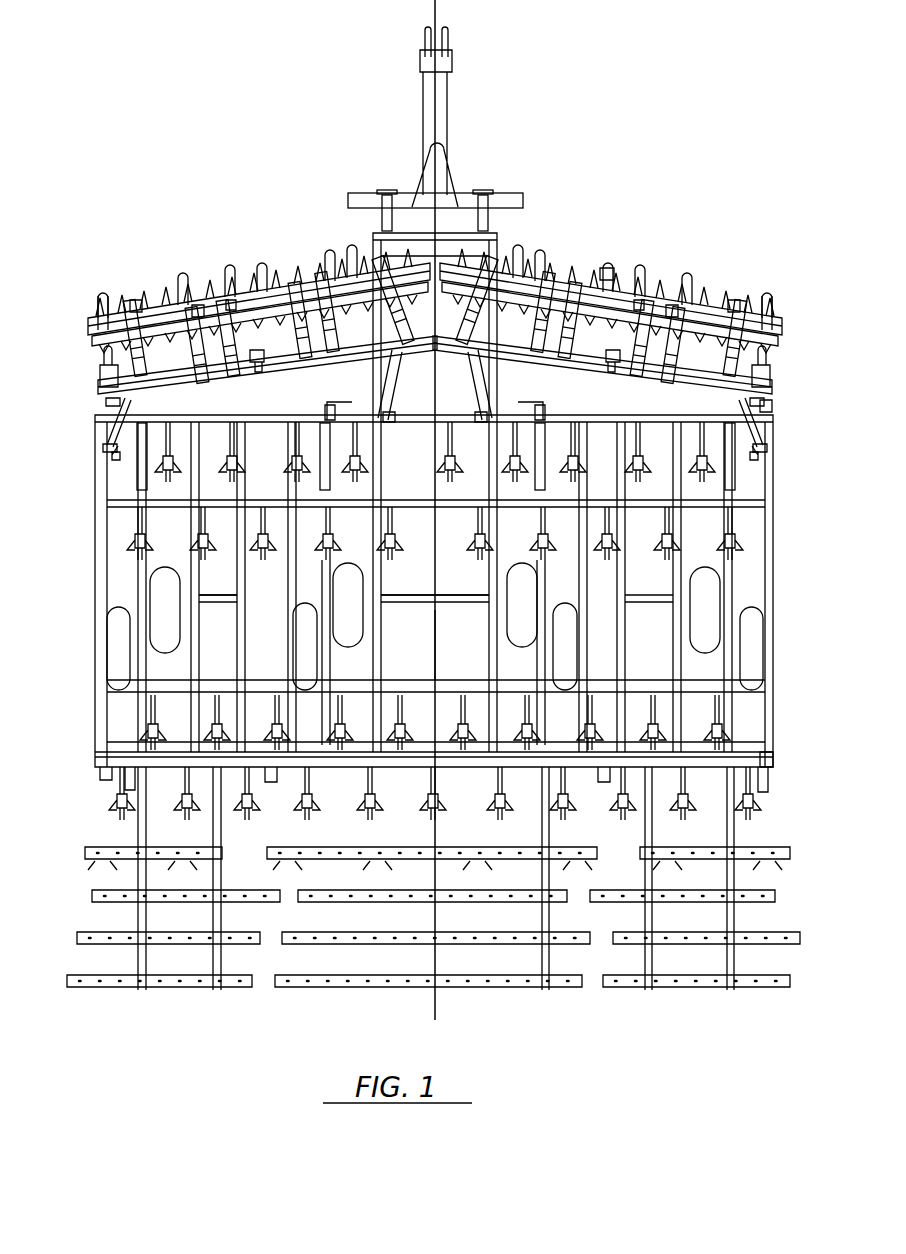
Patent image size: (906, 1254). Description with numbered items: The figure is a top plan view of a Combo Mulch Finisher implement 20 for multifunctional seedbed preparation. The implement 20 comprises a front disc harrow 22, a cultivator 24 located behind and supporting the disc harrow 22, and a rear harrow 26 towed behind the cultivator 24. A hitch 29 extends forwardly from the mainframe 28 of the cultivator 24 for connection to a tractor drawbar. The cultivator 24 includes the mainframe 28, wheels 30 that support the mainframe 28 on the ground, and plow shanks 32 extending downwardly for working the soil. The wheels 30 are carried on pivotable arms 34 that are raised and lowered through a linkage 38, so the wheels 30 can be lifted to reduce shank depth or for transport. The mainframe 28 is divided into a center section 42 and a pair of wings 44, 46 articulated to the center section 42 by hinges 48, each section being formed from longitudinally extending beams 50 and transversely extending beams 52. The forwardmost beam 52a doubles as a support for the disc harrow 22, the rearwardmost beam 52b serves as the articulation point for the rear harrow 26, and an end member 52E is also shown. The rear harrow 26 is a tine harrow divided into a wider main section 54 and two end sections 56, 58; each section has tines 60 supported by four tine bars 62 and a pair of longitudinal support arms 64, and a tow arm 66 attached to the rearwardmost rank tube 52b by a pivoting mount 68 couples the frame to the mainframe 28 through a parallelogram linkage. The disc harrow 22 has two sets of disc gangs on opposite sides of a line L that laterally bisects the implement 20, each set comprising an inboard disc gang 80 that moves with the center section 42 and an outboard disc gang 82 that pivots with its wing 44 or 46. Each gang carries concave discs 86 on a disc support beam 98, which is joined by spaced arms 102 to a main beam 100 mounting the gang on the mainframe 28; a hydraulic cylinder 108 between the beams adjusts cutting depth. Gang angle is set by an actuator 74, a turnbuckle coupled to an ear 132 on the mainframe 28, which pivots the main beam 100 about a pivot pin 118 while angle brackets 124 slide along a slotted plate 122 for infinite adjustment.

The Combo Mulch Finisher implement 20 is at (701, 218).
The front disc harrow 22 is at (180, 254).
The cultivator 24 is at (86, 584).
The rear harrow 26 is at (128, 1010).
The mainframe 28 is at (789, 504).
The hitch 29 is at (442, 170).
The wheels 30 is at (165, 632).
The plow shanks 32 is at (150, 470).
The arms 34 is at (332, 488).
The linkage 38 is at (331, 562).
The center section 42 is at (412, 784).
The wing 44 is at (172, 782).
The wing 46 is at (715, 783).
The hinges 48 is at (292, 402).
The longitudinally extending beams 50 is at (200, 624).
The transversely extending beams 52 is at (440, 678).
The frame member end 52E is at (616, 278).
The forwardmost beam 52a is at (772, 412).
The rearwardmost beam 52b is at (773, 764).
The main section 54 is at (495, 1006).
The end section 56 is at (198, 998).
The end section 58 is at (684, 1015).
The tines 60 is at (792, 860).
The tine bars 62 is at (455, 904).
The support arms 64 is at (300, 965).
The tow arm 66 is at (325, 883).
The pivoting mount 68 is at (128, 782).
The actuator 74 is at (108, 440).
The inboard disc gang 80 is at (304, 262).
The outboard disc gang 82 is at (142, 280).
The discs 86 is at (96, 305).
The disc support beam 98 is at (88, 322).
The main beam 100 is at (100, 399).
The arms 102 is at (273, 262).
The hydraulic cylinder 108 is at (208, 300).
The pivot pin 118 is at (258, 350).
The slotted plate 122 is at (106, 412).
The angle brackets 124 is at (100, 379).
The ear 132 is at (110, 464).
The line L is at (435, 1010).